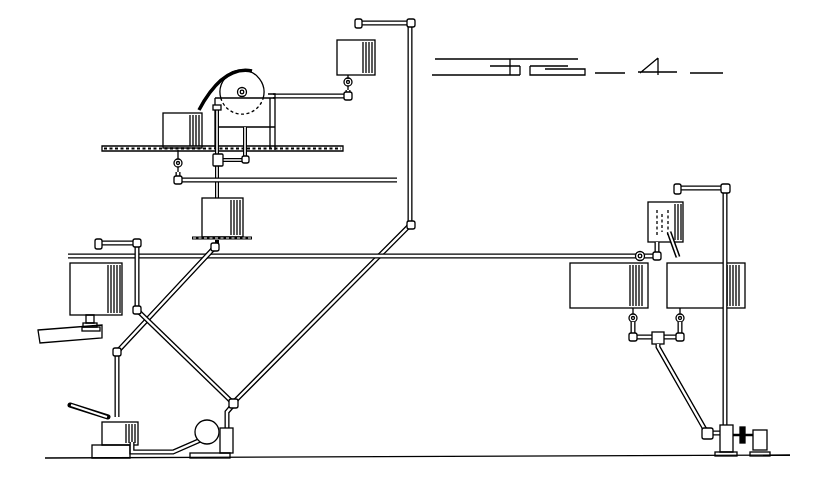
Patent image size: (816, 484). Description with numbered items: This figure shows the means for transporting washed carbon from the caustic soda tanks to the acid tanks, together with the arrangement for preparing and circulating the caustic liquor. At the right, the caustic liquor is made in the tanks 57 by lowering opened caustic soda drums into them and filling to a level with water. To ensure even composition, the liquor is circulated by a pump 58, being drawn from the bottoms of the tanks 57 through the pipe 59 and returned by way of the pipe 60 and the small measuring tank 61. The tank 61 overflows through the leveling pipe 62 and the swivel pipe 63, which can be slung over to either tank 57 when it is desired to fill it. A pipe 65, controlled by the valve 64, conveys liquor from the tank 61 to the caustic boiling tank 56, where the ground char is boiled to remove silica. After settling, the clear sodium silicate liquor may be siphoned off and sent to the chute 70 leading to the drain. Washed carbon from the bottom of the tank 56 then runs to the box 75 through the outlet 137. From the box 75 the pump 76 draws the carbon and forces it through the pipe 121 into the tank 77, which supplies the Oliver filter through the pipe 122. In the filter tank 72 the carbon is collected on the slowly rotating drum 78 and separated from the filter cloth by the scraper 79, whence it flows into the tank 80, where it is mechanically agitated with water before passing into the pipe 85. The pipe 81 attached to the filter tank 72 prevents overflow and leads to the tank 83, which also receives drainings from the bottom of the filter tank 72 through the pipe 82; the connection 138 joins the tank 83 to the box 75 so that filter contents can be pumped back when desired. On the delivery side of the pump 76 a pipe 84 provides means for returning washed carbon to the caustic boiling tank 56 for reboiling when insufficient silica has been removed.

The tank 56 is at (77, 282).
The tank 57 is at (598, 305).
The pump 58 is at (731, 428).
The pipe 59 is at (668, 378).
The pipe 60 is at (728, 242).
The measuring tank 61 is at (650, 203).
The leveling pipe 62 is at (655, 216).
The swivel pipe 63 is at (680, 247).
The valve 64 is at (638, 251).
The pipe 65 is at (504, 254).
The chute 70 is at (52, 342).
The filter tank 72 is at (270, 106).
The box 75 is at (139, 431).
The pump 76 is at (231, 439).
The tank 77 is at (341, 50).
The drum 78 is at (251, 80).
The scraper 79 is at (215, 89).
The tank 80 is at (168, 118).
The pipe 81 is at (214, 120).
The pipe 82 is at (250, 140).
The tank 83 is at (245, 220).
The pipe 84 is at (190, 360).
The pipe 85 is at (374, 178).
The pipe 121 is at (322, 318).
The pipe 122 is at (326, 99).
The outlet 137 is at (82, 403).
The connection 138 is at (182, 288).